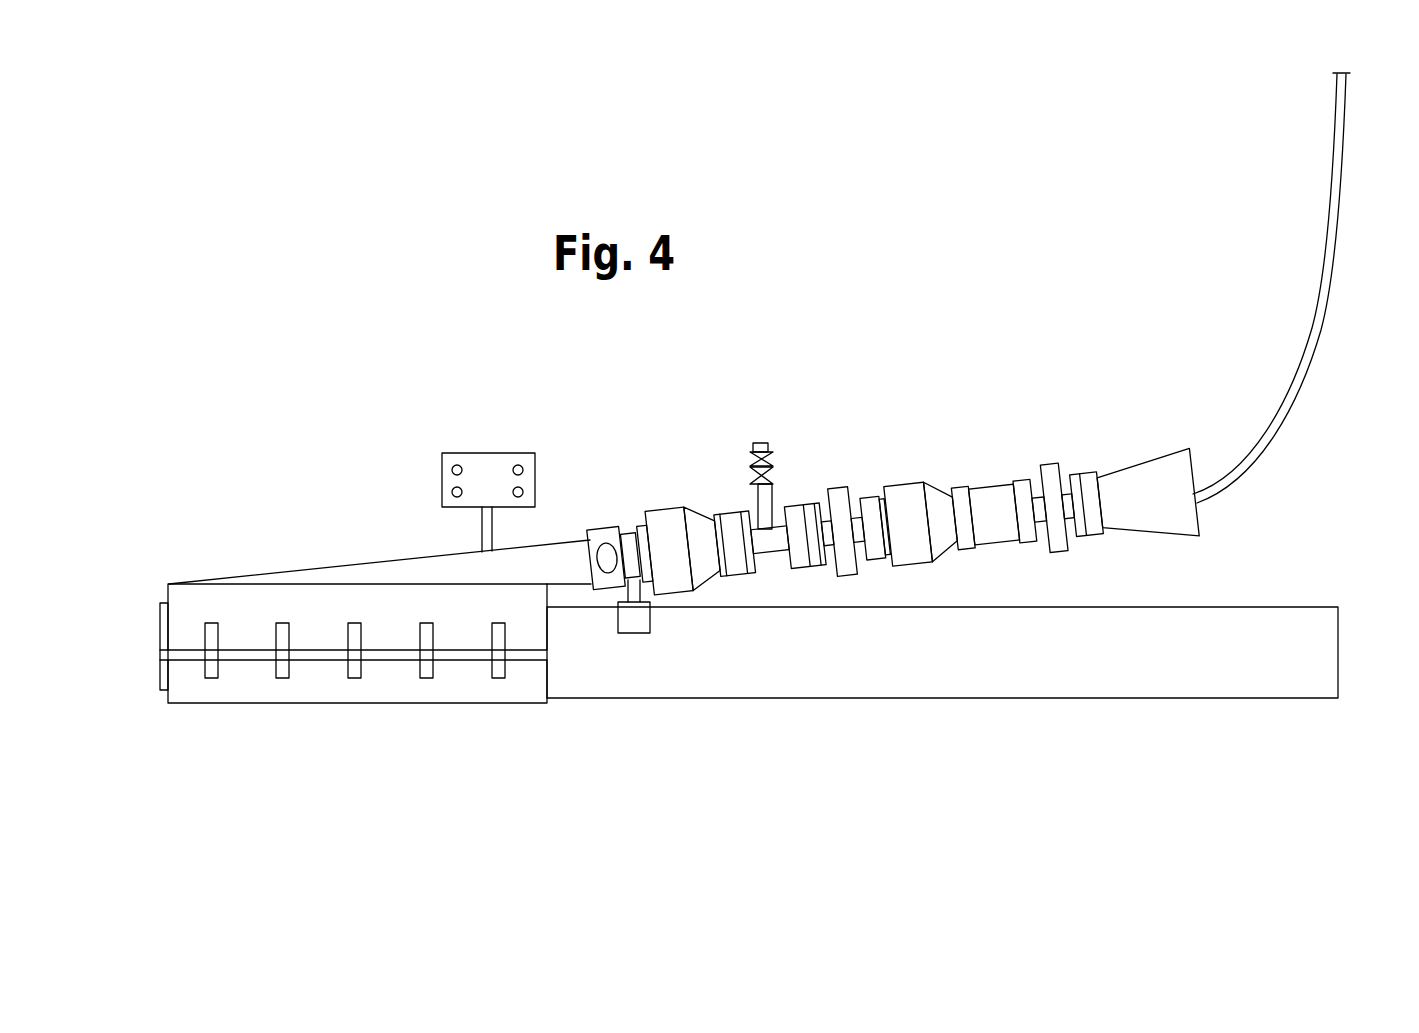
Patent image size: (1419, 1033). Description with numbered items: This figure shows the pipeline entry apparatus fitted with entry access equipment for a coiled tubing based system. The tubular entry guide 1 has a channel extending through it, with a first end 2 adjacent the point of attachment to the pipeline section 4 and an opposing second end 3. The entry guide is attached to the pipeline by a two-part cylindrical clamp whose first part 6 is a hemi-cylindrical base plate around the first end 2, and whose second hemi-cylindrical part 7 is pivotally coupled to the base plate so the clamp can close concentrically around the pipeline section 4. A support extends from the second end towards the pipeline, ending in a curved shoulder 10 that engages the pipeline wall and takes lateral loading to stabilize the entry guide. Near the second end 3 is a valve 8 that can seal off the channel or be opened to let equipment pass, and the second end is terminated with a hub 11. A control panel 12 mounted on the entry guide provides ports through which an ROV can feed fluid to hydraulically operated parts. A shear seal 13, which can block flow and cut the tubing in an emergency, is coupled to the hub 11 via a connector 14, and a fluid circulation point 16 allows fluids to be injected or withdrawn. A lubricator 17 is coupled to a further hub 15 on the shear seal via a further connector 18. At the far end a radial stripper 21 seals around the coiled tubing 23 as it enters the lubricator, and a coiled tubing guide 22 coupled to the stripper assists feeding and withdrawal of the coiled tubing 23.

The tubular entry guide 1 is at (403, 558).
The first end 2 is at (288, 578).
The opposing second end 3 is at (632, 527).
The pipeline section 4 is at (578, 675).
The first part 6 is at (177, 593).
The second hemi-cylindrical part 7 is at (203, 692).
The valve 8 is at (603, 527).
The shoulder 10 is at (632, 623).
The hub 11 is at (643, 527).
The control panel 12 is at (487, 463).
The shear seal 13 is at (842, 490).
The connector 14 is at (675, 522).
The further hub 15 is at (880, 505).
The fluid circulation point 16 is at (758, 443).
The lubricator 17 is at (993, 503).
The further connector 18 is at (912, 493).
The radial stripper 21 is at (1048, 473).
The coiled tubing guide 22 is at (1153, 483).
The coiled tubing 23 is at (1320, 322).